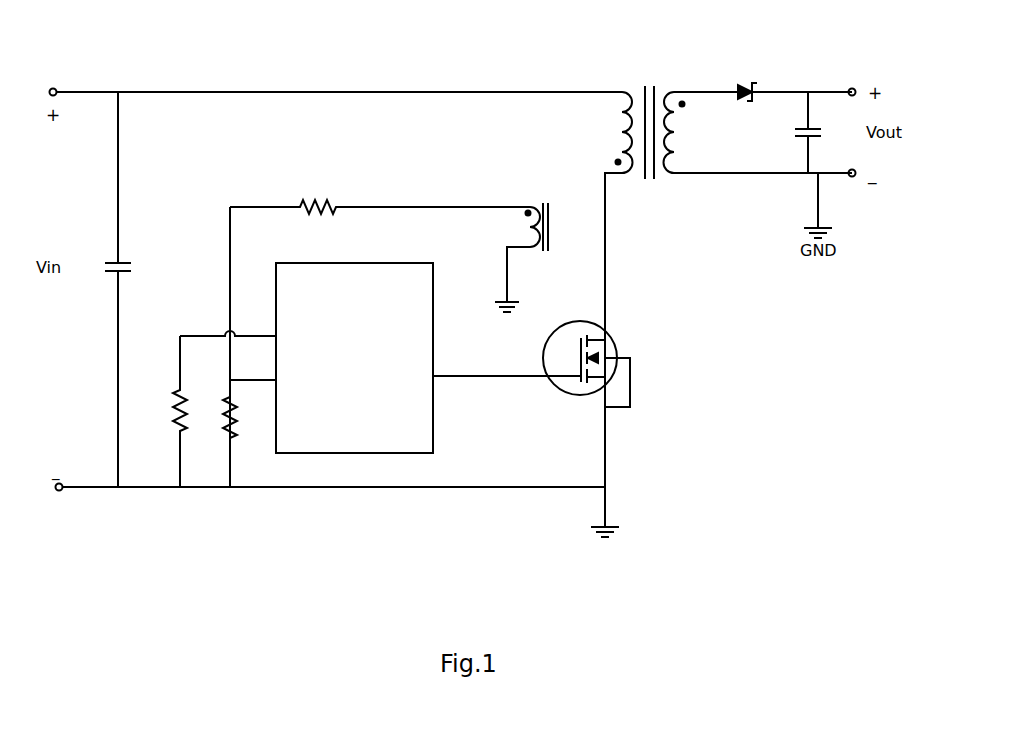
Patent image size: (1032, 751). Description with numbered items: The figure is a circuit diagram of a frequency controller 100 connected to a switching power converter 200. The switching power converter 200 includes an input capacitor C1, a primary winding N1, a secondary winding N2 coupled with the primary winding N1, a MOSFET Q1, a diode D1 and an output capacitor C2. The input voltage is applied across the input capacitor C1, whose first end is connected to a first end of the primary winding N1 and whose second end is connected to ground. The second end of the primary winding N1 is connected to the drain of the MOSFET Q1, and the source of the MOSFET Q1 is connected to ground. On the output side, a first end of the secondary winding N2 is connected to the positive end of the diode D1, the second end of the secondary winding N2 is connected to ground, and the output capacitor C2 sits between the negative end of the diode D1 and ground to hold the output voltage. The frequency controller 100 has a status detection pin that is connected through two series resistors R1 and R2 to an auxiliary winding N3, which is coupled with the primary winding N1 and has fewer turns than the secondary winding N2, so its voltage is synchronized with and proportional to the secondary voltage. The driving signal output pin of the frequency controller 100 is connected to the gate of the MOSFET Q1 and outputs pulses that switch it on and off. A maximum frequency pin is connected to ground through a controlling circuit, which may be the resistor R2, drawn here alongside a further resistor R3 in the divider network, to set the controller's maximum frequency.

The frequency controller 100 is at (371, 290).
The switching power converter 200 is at (699, 178).
The input capacitor C1 is at (132, 289).
The output capacitor C2 is at (793, 132).
The resistor R1 is at (380, 327).
The resistor R2 is at (207, 409).
The resistor R3 is at (249, 409).
The diode D1 is at (794, 80).
The MOSFET Q1 is at (537, 438).
The primary winding N1 is at (616, 216).
The secondary winding N2 is at (758, 132).
The auxiliary winding N3 is at (517, 273).